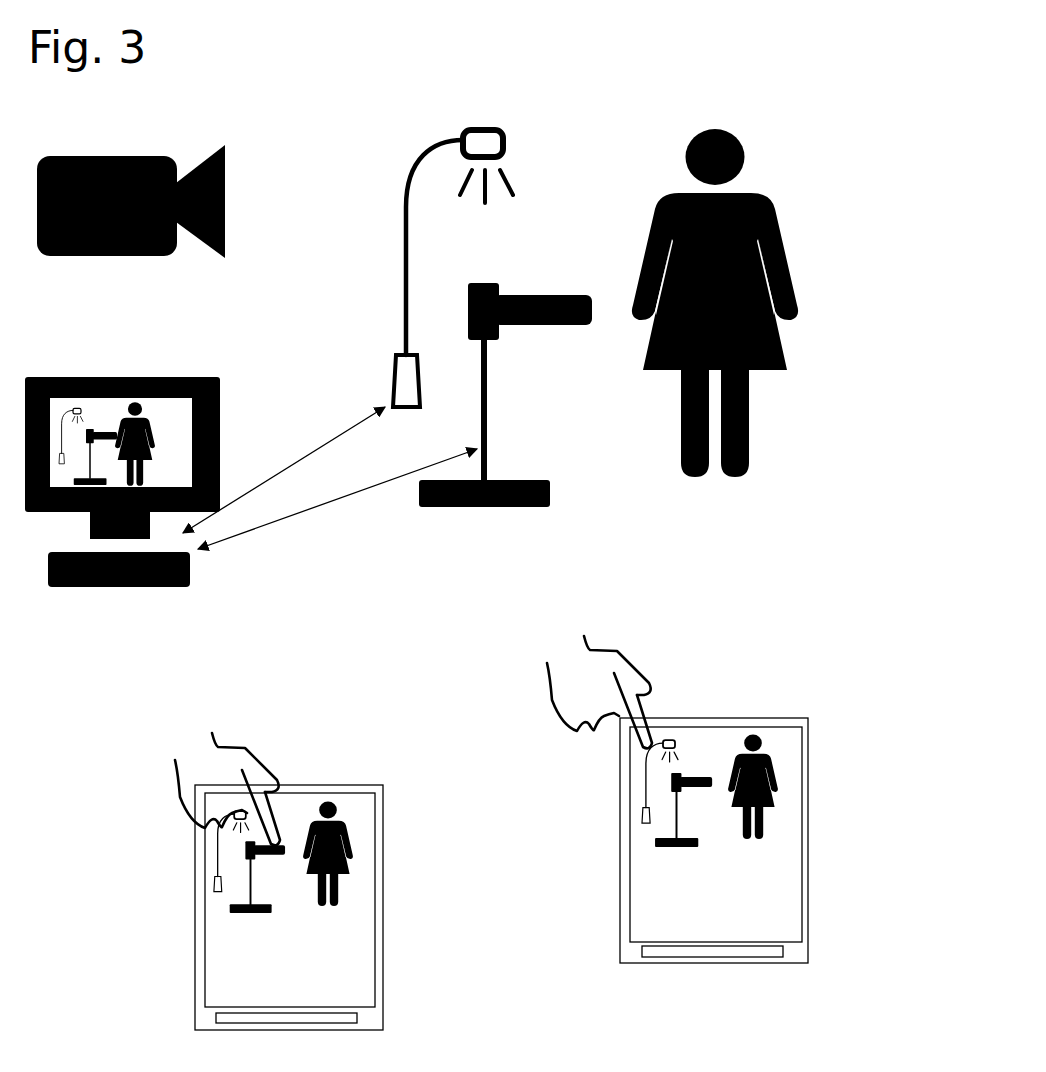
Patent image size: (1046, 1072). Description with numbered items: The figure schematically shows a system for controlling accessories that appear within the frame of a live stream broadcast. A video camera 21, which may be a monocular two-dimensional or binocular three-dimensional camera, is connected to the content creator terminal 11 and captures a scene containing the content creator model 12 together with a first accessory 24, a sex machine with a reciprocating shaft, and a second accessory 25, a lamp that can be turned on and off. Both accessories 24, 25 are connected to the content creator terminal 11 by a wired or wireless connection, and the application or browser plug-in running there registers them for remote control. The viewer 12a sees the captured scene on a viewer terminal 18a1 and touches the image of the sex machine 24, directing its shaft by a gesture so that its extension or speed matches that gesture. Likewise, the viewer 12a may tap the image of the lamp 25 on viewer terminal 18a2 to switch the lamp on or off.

The video camera 21 is at (173, 256).
The second accessory 25 is at (400, 279).
The first accessory 24 is at (557, 493).
The content creator model 12 is at (753, 440).
The content creator terminal 11 is at (205, 575).
The viewer 12a is at (172, 808).
The viewer terminal 18a1 is at (388, 980).
The viewer terminal 18a2 is at (825, 900).